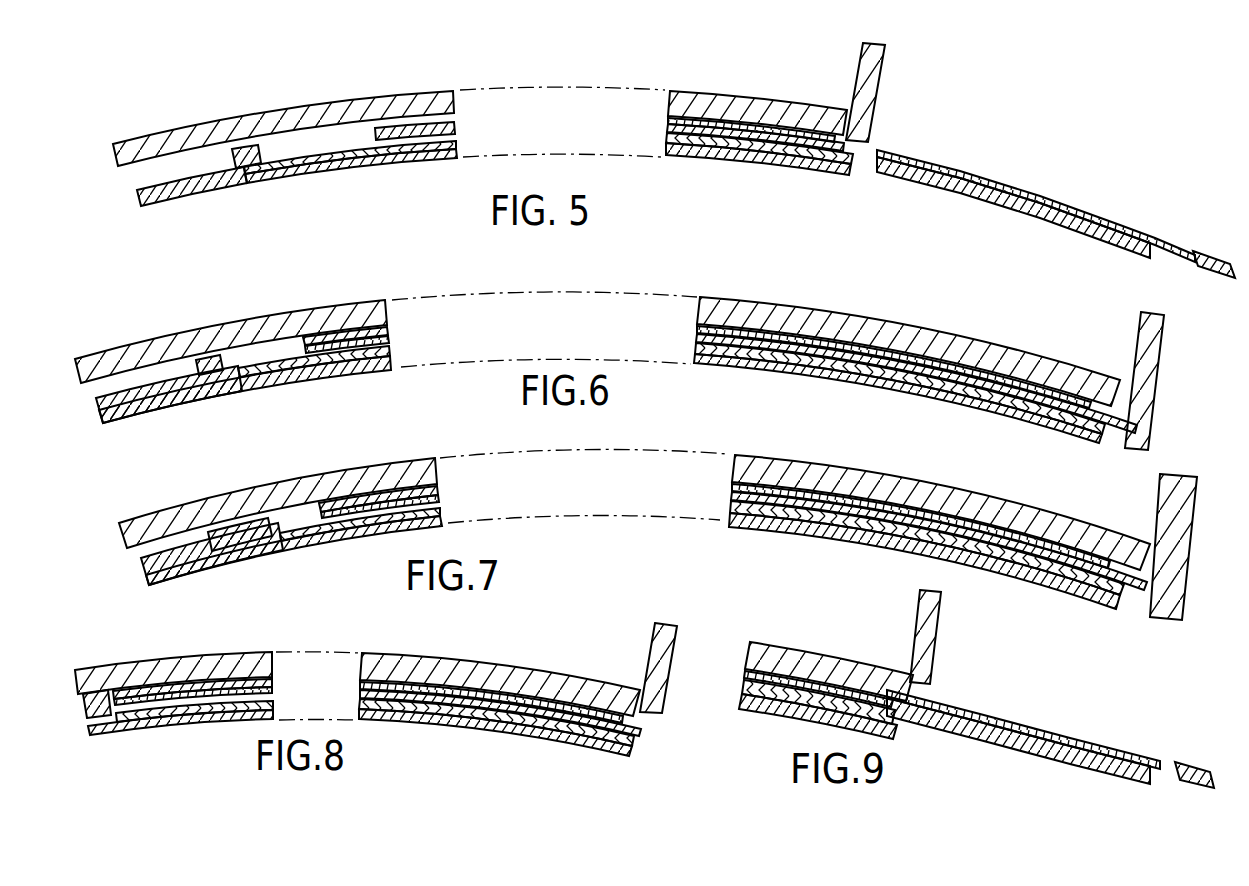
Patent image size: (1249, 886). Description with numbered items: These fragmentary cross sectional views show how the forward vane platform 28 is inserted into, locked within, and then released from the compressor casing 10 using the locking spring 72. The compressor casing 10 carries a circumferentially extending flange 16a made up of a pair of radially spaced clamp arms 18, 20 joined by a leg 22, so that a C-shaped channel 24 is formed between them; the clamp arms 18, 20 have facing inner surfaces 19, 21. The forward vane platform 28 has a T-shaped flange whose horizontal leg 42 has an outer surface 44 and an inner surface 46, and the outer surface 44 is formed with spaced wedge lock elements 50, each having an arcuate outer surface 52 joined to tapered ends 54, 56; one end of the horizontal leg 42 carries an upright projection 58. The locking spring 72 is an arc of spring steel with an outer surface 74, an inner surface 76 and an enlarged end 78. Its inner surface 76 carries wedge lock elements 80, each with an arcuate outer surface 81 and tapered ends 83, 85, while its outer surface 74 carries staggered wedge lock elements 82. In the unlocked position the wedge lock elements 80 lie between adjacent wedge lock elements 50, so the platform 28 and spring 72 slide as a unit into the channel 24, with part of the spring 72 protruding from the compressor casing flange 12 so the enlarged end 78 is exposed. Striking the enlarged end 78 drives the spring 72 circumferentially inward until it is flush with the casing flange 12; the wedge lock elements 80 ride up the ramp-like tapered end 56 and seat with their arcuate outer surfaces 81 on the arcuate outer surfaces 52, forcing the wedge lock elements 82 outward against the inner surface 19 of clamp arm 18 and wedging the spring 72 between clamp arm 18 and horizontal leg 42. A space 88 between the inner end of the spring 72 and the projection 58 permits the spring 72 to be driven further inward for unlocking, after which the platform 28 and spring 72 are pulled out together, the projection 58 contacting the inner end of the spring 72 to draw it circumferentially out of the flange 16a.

In FIG. 5, the compressor casing 10 is at (700, 93).
In FIG. 6, the compressor casing 10 is at (840, 312).
In FIG. 7, the compressor casing 10 is at (728, 463).
In FIG. 8, the compressor casing 10 is at (563, 677).
In FIG. 9, the compressor casing 10 is at (863, 652).
In FIG. 5, the compressor casing flange 12 is at (877, 65).
In FIG. 6, the compressor casing flange 12 is at (1157, 322).
In FIG. 7, the compressor casing flange 12 is at (1170, 493).
In FIG. 8, the compressor casing flange 12 is at (657, 637).
In FIG. 9, the compressor casing flange 12 is at (940, 613).
In FIG. 5, the circumferentially extending flange 16a is at (113, 203).
In FIG. 6, the circumferentially extending flange 16a is at (340, 300).
In FIG. 7, the circumferentially extending flange 16a is at (403, 450).
In FIG. 8, the circumferentially extending flange 16a is at (242, 650).
In FIG. 9, the circumferentially extending flange 16a is at (797, 640).
In FIG. 5, the clamp arm 18 is at (330, 107).
In FIG. 6, the clamp arm 18 is at (713, 310).
In FIG. 7, the clamp arm 18 is at (773, 467).
In FIG. 8, the clamp arm 18 is at (397, 640).
In FIG. 9, the clamp arm 18 is at (750, 662).
In FIG. 5, the inner surface 19 is at (373, 120).
In FIG. 6, the inner surface 19 is at (777, 330).
In FIG. 7, the inner surface 19 is at (837, 487).
In FIG. 8, the inner surface 19 is at (503, 693).
In FIG. 5, the clamp arm 20 is at (337, 163).
In FIG. 6, the clamp arm 20 is at (722, 365).
In FIG. 7, the clamp arm 20 is at (730, 510).
In FIG. 8, the clamp arm 20 is at (417, 717).
In FIG. 9, the clamp arm 20 is at (743, 705).
In FIG. 5, the inner surface 21 is at (200, 173).
In FIG. 6, the inner surface 21 is at (392, 347).
In FIG. 7, the inner surface 21 is at (442, 507).
In FIG. 8, the inner surface 21 is at (273, 700).
In FIG. 5, the leg 22 is at (170, 173).
In FIG. 6, the leg 22 is at (253, 357).
In FIG. 7, the leg 22 is at (287, 523).
In FIG. 5, the C-shaped channel 24 is at (282, 137).
In FIG. 6, the C-shaped channel 24 is at (676, 298).
In FIG. 7, the C-shaped channel 24 is at (460, 478).
In FIG. 5, the forward vane platform 28 is at (460, 141).
In FIG. 6, the forward vane platform 28 is at (1017, 410).
In FIG. 7, the forward vane platform 28 is at (1150, 600).
In FIG. 8, the forward vane platform 28 is at (200, 710).
In FIG. 9, the forward vane platform 28 is at (1010, 740).
In FIG. 5, the horizontal leg 42 is at (920, 183).
In FIG. 6, the horizontal leg 42 is at (857, 380).
In FIG. 7, the horizontal leg 42 is at (997, 553).
In FIG. 8, the horizontal leg 42 is at (507, 743).
In FIG. 9, the horizontal leg 42 is at (1027, 747).
In FIG. 5, the outer surface 44 is at (997, 213).
In FIG. 6, the outer surface 44 is at (927, 383).
In FIG. 7, the outer surface 44 is at (930, 508).
In FIG. 8, the outer surface 44 is at (480, 707).
In FIG. 9, the outer surface 44 is at (1047, 712).
In FIG. 5, the inner surface 46 is at (1050, 220).
In FIG. 6, the inner surface 46 is at (973, 407).
In FIG. 7, the inner surface 46 is at (353, 537).
In FIG. 8, the inner surface 46 is at (563, 740).
In FIG. 9, the inner surface 46 is at (1097, 753).
In FIG. 5, the wedge lock element 50 is at (817, 173).
In FIG. 6, the wedge lock element 50 is at (777, 353).
In FIG. 7, the wedge lock element 50 is at (790, 503).
In FIG. 9, the wedge lock element 50 is at (893, 703).
In FIG. 5, the arcuate outer surface 52 is at (860, 140).
In FIG. 7, the arcuate outer surface 52 is at (833, 510).
In FIG. 5, the tapered end 54 is at (793, 137).
In FIG. 7, the tapered end 54 is at (763, 523).
In FIG. 5, the tapered end 56 is at (877, 150).
In FIG. 7, the tapered end 56 is at (877, 530).
In FIG. 5, the upright projection 58 is at (250, 173).
In FIG. 6, the upright projection 58 is at (200, 360).
In FIG. 7, the upright projection 58 is at (217, 533).
In FIG. 8, the upright projection 58 is at (102, 697).
In FIG. 5, the locking spring 72 is at (1130, 220).
In FIG. 6, the locking spring 72 is at (1030, 383).
In FIG. 7, the locking spring 72 is at (442, 493).
In FIG. 8, the locking spring 72 is at (182, 703).
In FIG. 9, the locking spring 72 is at (943, 690).
In FIG. 5, the outer surface 74 is at (950, 163).
In FIG. 6, the outer surface 74 is at (873, 347).
In FIG. 7, the outer surface 74 is at (880, 502).
In FIG. 9, the outer surface 74 is at (893, 685).
In FIG. 5, the inner surface 76 is at (1037, 190).
In FIG. 5, the enlarged end 78 is at (1207, 253).
In FIG. 6, the enlarged end 78 is at (1147, 417).
In FIG. 7, the enlarged end 78 is at (1160, 577).
In FIG. 8, the enlarged end 78 is at (680, 725).
In FIG. 9, the enlarged end 78 is at (1130, 740).
In FIG. 5, the wedge lock element 80 is at (907, 177).
In FIG. 6, the wedge lock element 80 is at (820, 353).
In FIG. 7, the wedge lock element 80 is at (797, 500).
In FIG. 9, the wedge lock element 80 is at (830, 697).
In FIG. 5, the arcuate outer surface 81 is at (873, 187).
In FIG. 6, the arcuate outer surface 81 is at (790, 347).
In FIG. 5, the wedge lock element 82 is at (737, 133).
In FIG. 6, the wedge lock element 82 is at (973, 367).
In FIG. 8, the wedge lock element 82 is at (430, 680).
In FIG. 9, the wedge lock element 82 is at (1107, 702).
In FIG. 5, the tapered end 83 is at (867, 180).
In FIG. 5, the tapered end 85 is at (903, 197).
In FIG. 6, the space 88 is at (235, 387).
In FIG. 7, the space 88 is at (273, 557).